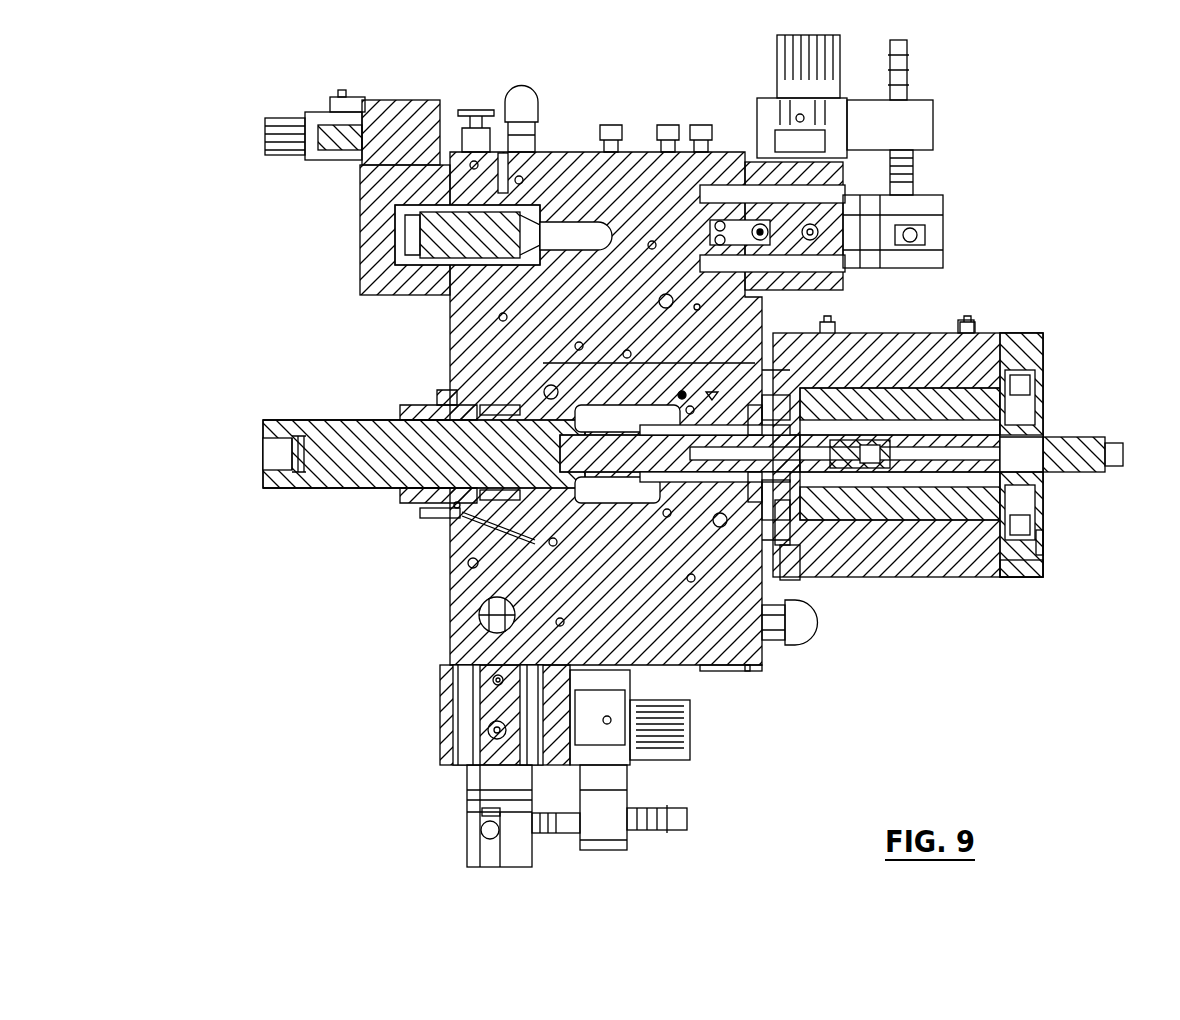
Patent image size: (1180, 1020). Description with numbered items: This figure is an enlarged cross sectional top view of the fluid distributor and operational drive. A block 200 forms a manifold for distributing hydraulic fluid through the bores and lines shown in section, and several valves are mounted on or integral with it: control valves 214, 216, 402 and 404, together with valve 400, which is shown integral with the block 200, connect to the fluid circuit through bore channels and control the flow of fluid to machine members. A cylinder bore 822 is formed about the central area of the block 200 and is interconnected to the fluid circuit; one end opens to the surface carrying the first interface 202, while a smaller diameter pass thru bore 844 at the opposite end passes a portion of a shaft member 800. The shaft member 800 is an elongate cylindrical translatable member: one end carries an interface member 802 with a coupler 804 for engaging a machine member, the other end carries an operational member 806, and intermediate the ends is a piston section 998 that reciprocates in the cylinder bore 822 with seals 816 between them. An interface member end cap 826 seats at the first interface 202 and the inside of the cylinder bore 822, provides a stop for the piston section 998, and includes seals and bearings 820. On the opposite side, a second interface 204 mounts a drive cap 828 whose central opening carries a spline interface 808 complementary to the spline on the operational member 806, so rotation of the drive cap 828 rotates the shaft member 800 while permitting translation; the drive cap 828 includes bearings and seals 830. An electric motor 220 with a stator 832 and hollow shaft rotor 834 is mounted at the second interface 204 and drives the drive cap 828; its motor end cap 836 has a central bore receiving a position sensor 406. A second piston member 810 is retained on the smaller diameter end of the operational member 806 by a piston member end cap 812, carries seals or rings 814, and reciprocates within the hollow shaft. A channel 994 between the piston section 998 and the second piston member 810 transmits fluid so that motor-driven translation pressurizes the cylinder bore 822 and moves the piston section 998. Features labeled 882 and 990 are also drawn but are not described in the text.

The block 200 is at (750, 672).
The first interface 202 is at (447, 550).
The second interface 204 is at (767, 603).
The control valve 214 is at (467, 863).
The control valve 216 is at (630, 852).
The electric motor 220 is at (1000, 578).
The valve 400 is at (372, 100).
The control valve 402 is at (930, 108).
The control valve 404 is at (943, 200).
The position sensor 406 is at (1100, 437).
The shaft member 800 is at (372, 453).
The interface member 802 is at (310, 420).
The coupler 804 is at (268, 450).
The operational member 806 is at (470, 612).
The interface 808 is at (740, 500).
The second piston member 810 is at (895, 505).
The piston member end cap 812 is at (1040, 395).
The seals or rings 814 is at (970, 412).
The seals 816 is at (540, 410).
The seals/bearings 820 is at (400, 405).
The cylinder bore 822 is at (472, 573).
The interface member end cap 826 is at (440, 395).
The drive cap 828 is at (830, 520).
The bearings and seals 830 is at (855, 342).
The stator 832 is at (966, 320).
The hollow shaft rotor 834 is at (1005, 400).
The motor end cap 836 is at (1043, 548).
The pass thru bore 844 is at (712, 400).
The passage 882 is at (705, 490).
The pin 990 is at (495, 477).
The channel 994 is at (665, 490).
The piston section 998 is at (447, 328).